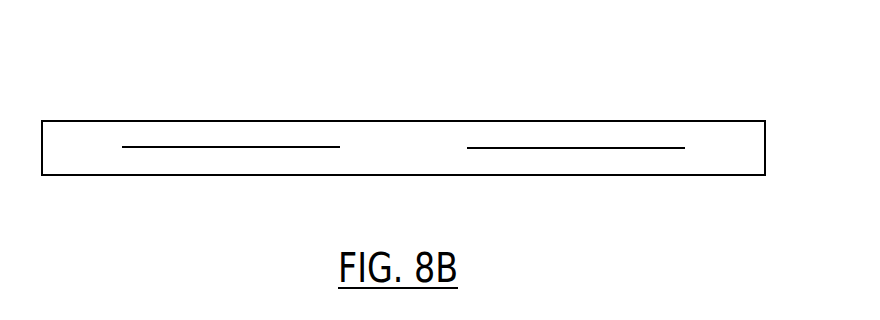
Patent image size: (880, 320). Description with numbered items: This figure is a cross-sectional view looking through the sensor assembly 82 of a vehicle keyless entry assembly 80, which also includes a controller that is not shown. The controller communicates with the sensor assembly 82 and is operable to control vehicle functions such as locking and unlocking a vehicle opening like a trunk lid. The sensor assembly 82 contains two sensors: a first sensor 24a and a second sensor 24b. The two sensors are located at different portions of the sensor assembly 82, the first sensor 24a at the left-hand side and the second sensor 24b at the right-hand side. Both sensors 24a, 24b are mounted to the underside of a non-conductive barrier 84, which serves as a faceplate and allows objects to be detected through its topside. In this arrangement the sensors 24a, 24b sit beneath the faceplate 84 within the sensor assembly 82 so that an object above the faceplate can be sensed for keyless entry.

The keyless entry assembly 80 is at (652, 60).
The non-conductive barrier 84 is at (390, 121).
The sensor assembly 82 is at (300, 193).
The first sensor 24a is at (189, 148).
The second sensor 24b is at (506, 148).